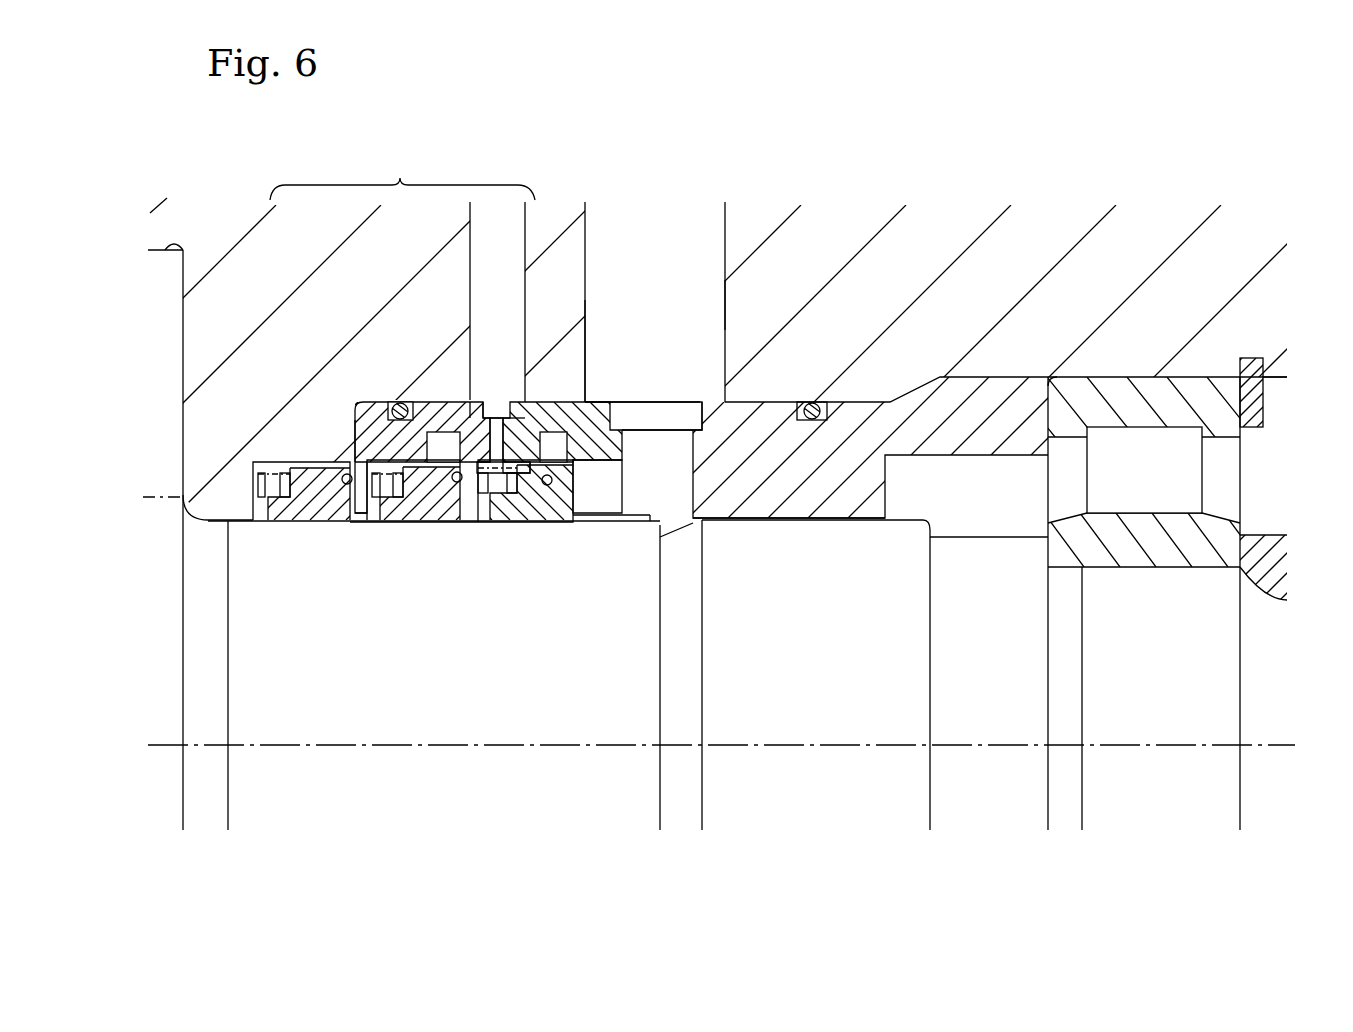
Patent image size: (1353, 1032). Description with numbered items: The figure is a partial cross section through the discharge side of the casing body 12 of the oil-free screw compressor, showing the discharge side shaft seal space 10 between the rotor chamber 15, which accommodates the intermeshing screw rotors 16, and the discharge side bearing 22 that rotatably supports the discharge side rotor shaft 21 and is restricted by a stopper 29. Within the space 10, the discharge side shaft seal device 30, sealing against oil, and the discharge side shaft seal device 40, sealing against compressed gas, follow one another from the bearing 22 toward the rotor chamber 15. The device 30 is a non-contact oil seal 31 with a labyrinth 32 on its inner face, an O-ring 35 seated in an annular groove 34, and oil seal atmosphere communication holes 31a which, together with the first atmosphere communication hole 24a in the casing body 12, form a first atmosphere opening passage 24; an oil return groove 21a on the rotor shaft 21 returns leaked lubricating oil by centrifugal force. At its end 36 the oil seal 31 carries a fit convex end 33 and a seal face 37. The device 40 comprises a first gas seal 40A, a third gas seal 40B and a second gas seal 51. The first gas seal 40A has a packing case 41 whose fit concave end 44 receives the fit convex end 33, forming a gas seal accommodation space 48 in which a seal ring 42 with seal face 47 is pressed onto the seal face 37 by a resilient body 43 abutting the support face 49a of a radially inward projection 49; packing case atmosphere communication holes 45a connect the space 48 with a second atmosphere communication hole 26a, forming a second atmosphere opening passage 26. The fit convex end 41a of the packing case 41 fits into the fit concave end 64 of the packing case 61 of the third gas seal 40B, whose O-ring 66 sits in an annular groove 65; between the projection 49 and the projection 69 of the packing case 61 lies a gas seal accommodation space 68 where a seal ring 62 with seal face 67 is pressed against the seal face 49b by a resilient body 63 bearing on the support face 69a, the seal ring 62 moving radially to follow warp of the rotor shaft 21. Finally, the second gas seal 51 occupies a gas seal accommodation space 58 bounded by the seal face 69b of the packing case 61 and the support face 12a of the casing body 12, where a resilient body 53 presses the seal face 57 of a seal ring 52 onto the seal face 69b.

The discharge side shaft seal space 10 is at (793, 522).
The casing body 12 is at (1010, 245).
The support face 12a is at (263, 522).
The rotor chamber 15 is at (183, 248).
The screw rotors 16 is at (165, 310).
The discharge side rotor shaft 21 is at (917, 703).
The oil return groove 21a is at (693, 687).
The discharge side bearing 22 is at (1147, 390).
The first atmosphere opening passage 24 is at (712, 253).
The first atmosphere communication hole 24a is at (708, 312).
The second atmosphere opening passage 26 is at (485, 247).
The second atmosphere communication hole 26a is at (510, 240).
The stopper 29 is at (1262, 365).
The discharge side shaft seal device 30 is at (876, 378).
The oil seal 31 is at (772, 450).
The oil seal atmosphere communication holes 31a is at (633, 522).
The labyrinth 32 is at (843, 520).
The fit convex end 33 is at (545, 335).
The concave portion 34 is at (800, 402).
The O-ring 35 is at (812, 402).
The end 36 is at (598, 400).
The seal face 37 is at (630, 400).
The discharge side shaft seal device 40 is at (456, 500).
The first gas seal 40A is at (545, 400).
The third gas seal 40B is at (378, 393).
The packing case 41 is at (470, 430).
The fit convex end 41a is at (430, 400).
The seal ring 42 is at (545, 522).
The resilient body 43 is at (487, 522).
The fit concave end 44 is at (527, 390).
The packing case atmosphere communication holes 45a is at (570, 522).
The seal face 47 is at (598, 522).
The gas seal accommodation space 48 is at (503, 522).
The projection 49 is at (478, 522).
The support face 49a is at (497, 522).
The seal face 49b is at (488, 400).
The second gas seal 51 is at (299, 448).
The seal ring 52 is at (283, 522).
The resilient body 53 is at (257, 487).
The seal face 57 is at (353, 520).
The gas seal accommodation space 58 is at (270, 474).
The packing case 61 is at (300, 420).
The seal ring 62 is at (420, 522).
The resilient body 63 is at (365, 522).
The fit concave end 64 is at (447, 430).
The concave portion 65 is at (400, 402).
The O-ring 66 is at (405, 400).
The seal face 67 is at (470, 522).
The gas seal accommodation space 68 is at (350, 466).
The projection 69 is at (358, 522).
The support face 69a is at (378, 522).
The seal face 69b is at (300, 462).